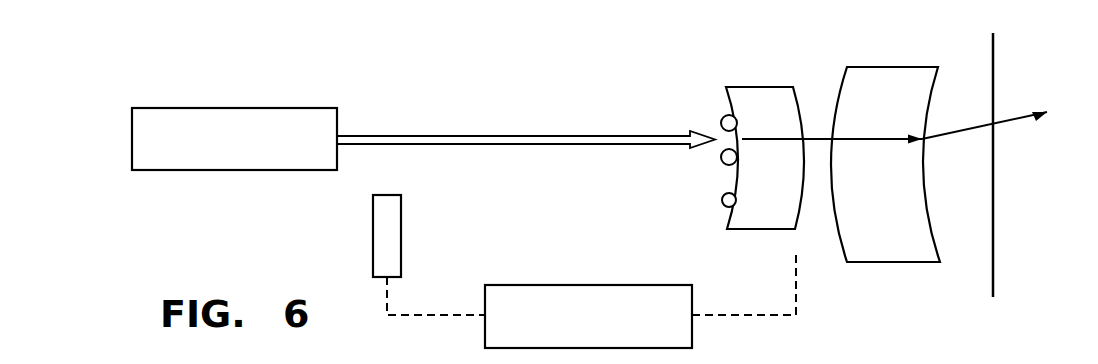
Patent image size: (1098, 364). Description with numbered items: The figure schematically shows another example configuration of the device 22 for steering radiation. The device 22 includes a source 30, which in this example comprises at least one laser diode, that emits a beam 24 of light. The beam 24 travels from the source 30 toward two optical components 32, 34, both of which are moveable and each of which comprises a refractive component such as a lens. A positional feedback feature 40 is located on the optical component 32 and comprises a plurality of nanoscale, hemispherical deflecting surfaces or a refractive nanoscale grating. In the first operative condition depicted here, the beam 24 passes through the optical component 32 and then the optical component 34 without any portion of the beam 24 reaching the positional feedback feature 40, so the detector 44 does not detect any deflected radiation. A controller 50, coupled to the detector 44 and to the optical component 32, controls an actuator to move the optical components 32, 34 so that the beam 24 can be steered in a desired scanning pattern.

The device 22 is at (294, 66).
The beam 24 is at (583, 137).
The source of radiation 30 is at (188, 110).
The optical component 32 is at (752, 90).
The optical component 34 is at (867, 72).
The positional feedback feature 40 is at (722, 162).
The detector 44 is at (375, 238).
The controller 50 is at (540, 288).